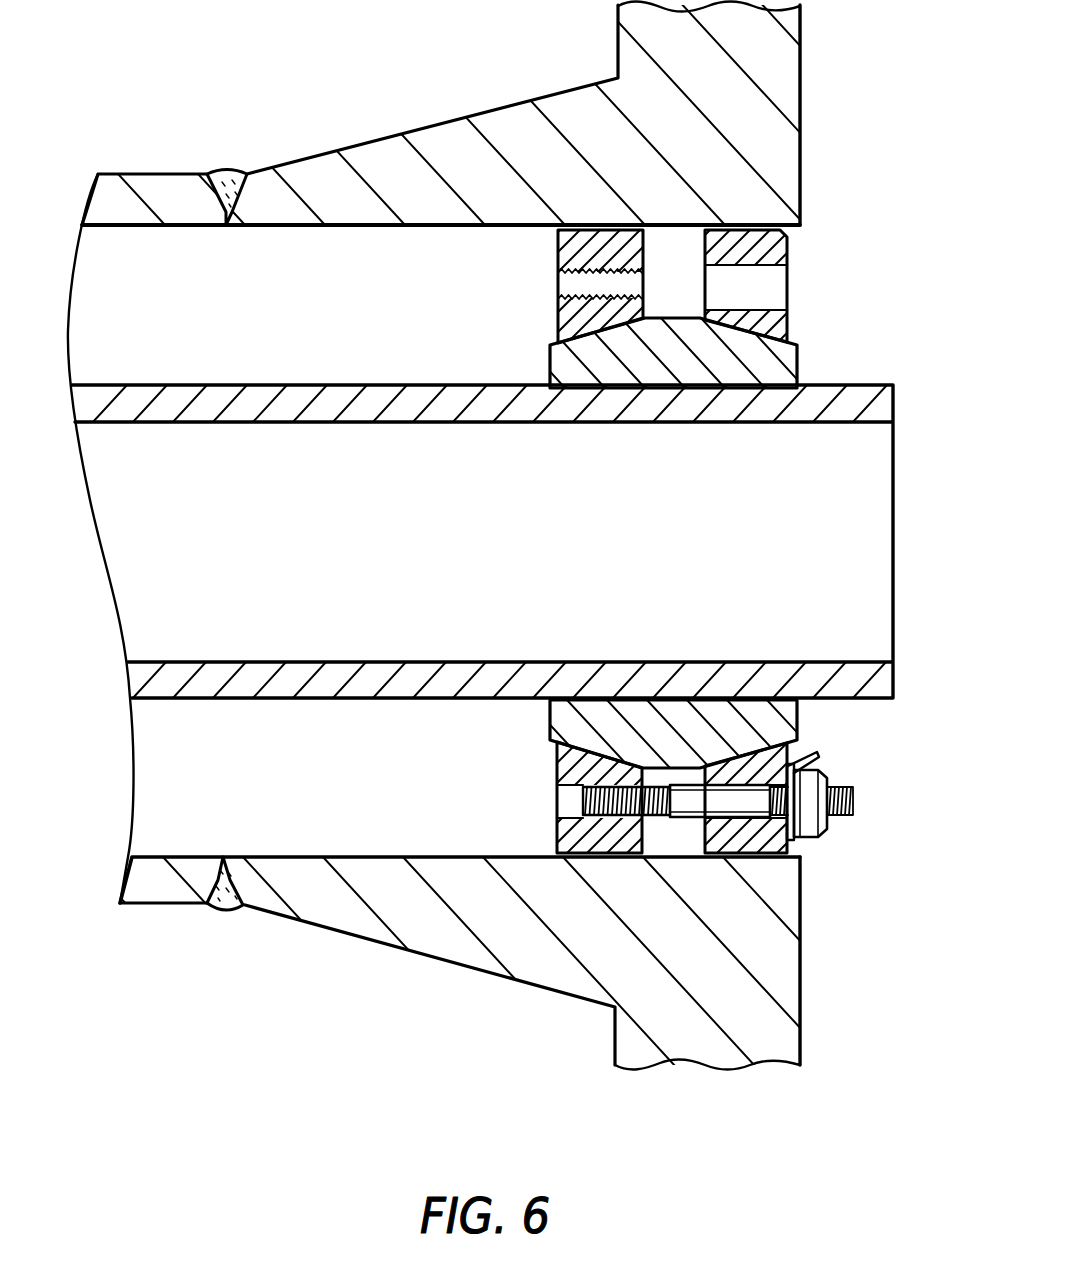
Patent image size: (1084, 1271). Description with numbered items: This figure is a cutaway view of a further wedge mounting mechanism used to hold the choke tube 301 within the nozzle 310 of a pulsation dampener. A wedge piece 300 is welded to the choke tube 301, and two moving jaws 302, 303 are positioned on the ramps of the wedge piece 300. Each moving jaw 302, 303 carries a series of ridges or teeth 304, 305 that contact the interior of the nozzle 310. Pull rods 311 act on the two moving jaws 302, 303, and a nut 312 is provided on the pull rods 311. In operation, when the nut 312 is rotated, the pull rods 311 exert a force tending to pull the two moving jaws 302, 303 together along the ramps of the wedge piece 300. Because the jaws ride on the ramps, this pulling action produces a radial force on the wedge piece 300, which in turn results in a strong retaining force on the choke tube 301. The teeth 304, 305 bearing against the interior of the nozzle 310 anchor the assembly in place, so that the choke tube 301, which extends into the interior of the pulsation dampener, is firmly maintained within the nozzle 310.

The wedge piece 300 is at (800, 345).
The choke tube 301 is at (862, 387).
The moving jaw 302 is at (558, 247).
The moving jaw 303 is at (705, 246).
The ridges or teeth 304 is at (627, 228).
The ridges or teeth 305 is at (790, 210).
The nozzle 310 is at (367, 143).
The pull rods 311 is at (830, 773).
The nut 312 is at (828, 832).